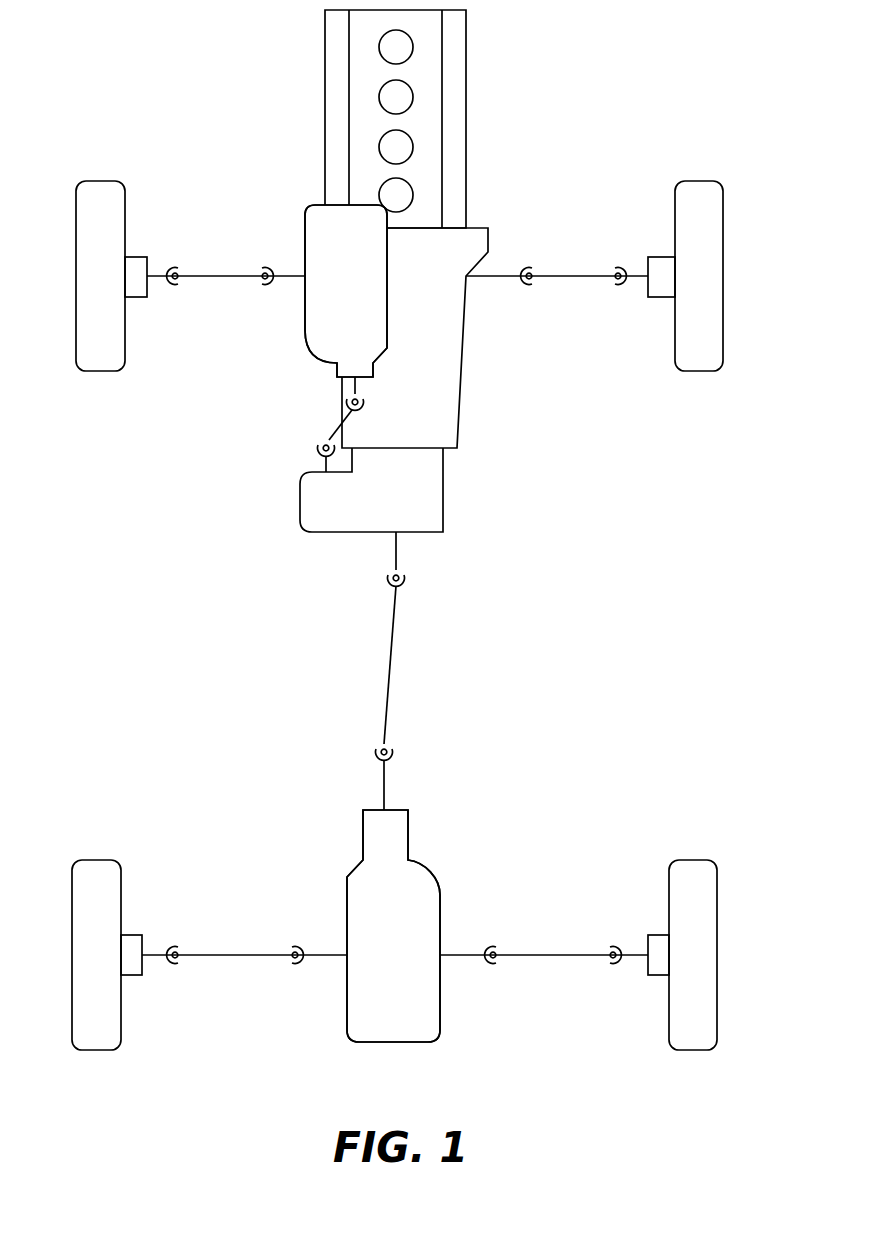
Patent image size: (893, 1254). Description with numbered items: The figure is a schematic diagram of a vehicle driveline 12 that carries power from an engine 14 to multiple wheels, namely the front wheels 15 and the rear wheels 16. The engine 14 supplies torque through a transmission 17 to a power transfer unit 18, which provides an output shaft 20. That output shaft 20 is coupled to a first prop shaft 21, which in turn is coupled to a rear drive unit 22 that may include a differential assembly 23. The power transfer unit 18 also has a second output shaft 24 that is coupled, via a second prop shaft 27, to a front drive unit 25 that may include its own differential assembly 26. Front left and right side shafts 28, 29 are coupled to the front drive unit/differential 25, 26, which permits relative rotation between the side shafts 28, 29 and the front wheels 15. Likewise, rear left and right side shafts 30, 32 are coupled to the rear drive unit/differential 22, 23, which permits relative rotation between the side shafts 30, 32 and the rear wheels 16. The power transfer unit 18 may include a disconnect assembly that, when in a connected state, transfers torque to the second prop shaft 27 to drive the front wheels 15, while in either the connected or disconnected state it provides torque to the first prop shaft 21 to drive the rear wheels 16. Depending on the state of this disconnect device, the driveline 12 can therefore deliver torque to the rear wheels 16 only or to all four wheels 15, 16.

The vehicle driveline 12 is at (508, 620).
The engine 14 is at (466, 58).
The front wheels 15 is at (103, 181).
The rear wheels 16 is at (100, 860).
The transmission 17 is at (463, 345).
The power transfer unit 18 is at (443, 494).
The output shaft 20 is at (397, 545).
The first prop shaft 21 is at (394, 623).
The rear drive unit 22 is at (388, 1042).
The differential assembly 23 is at (393, 926).
The output shaft 24 is at (322, 466).
The front drive unit 25 is at (305, 330).
The differential assembly 26 is at (346, 291).
The second prop shaft 27 is at (340, 432).
The front left side shaft 28 is at (225, 264).
The front right side shaft 29 is at (575, 264).
The rear left side shaft 30 is at (237, 943).
The rear right side shaft 32 is at (556, 943).